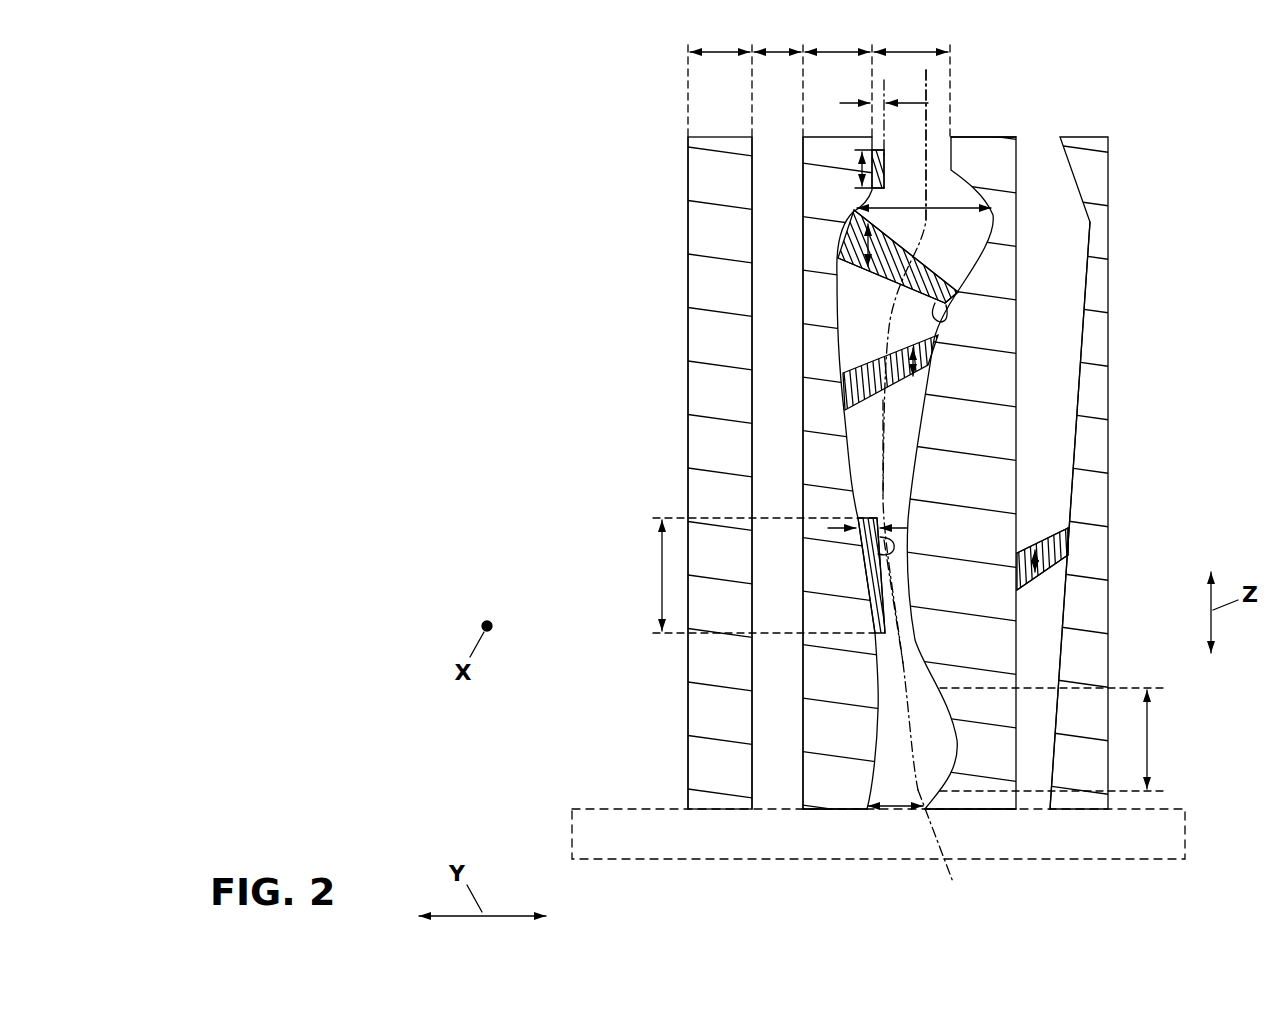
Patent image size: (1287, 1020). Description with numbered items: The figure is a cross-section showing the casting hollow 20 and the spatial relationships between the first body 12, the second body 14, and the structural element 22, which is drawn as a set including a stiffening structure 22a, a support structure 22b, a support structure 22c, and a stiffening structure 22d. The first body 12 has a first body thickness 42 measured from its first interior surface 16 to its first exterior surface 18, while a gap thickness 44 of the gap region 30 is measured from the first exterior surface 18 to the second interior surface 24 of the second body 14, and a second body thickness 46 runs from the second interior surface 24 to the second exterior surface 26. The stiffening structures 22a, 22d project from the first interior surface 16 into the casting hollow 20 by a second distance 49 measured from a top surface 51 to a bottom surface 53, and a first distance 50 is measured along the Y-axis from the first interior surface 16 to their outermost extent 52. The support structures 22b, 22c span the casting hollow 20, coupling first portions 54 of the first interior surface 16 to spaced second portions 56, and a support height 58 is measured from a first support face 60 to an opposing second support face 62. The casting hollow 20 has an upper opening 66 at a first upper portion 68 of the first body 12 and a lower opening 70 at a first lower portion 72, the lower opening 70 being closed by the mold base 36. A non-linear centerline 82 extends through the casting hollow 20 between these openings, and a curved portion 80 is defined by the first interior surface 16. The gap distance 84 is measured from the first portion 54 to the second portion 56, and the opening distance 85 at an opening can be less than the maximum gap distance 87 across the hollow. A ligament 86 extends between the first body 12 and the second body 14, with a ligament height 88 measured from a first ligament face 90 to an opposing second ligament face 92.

The first body 12 is at (996, 813).
The second body 14 is at (716, 814).
The first interior surface 16 is at (885, 707).
The first exterior surface 18 is at (800, 796).
The casting hollow 20 is at (850, 313).
The structural element 22 is at (898, 405).
The stiffening structure 22a is at (892, 156).
The support structure 22b is at (925, 251).
The support structure 22c is at (880, 425).
The stiffening structure 22d is at (893, 628).
The second interior surface 24 is at (753, 158).
The second exterior surface 26 is at (686, 167).
The gap region 30 is at (1028, 664).
The mold base 36 is at (568, 833).
The first body thickness 42 is at (834, 48).
The gap thickness 44 is at (779, 48).
The second body thickness 46 is at (730, 48).
The second distance 49 is at (856, 184).
The first distance 50 is at (834, 102).
The top surface 51 is at (878, 190).
The outermost extent 52 is at (873, 548).
The bottom surface 53 is at (880, 148).
The first portion 54 is at (858, 229).
The second portion 56 is at (960, 292).
The support height 58 is at (872, 240).
The first support face 60 is at (932, 282).
The second support face 62 is at (950, 310).
The upper opening 66 is at (932, 150).
The first upper portion 68 is at (999, 137).
The lower opening 70 is at (866, 810).
The first lower portion 72 is at (977, 812).
The curved portion 80 is at (1152, 735).
The centerline 82 is at (942, 854).
The gap distance 84 is at (904, 48).
The opening distance 85 is at (889, 812).
The ligament 86 is at (1031, 593).
The maximum gap distance 87 is at (974, 207).
The ligament height 88 is at (1032, 560).
The first ligament face 90 is at (1050, 530).
The second ligament face 92 is at (1040, 563).